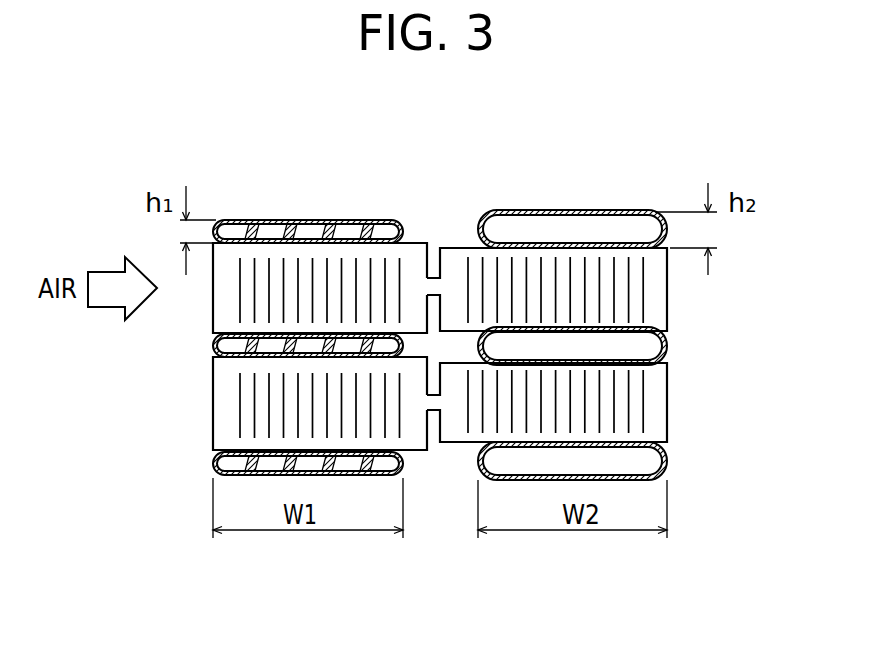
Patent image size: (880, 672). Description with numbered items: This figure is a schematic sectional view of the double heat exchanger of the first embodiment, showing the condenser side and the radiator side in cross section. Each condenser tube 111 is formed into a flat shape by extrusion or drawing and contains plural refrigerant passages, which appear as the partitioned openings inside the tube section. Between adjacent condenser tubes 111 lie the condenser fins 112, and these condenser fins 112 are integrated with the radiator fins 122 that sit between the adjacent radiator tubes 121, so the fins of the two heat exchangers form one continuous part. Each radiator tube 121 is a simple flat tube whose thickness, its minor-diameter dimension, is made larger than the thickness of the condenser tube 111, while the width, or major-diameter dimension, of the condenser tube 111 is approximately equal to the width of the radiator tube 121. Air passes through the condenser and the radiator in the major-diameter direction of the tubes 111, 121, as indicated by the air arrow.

The condenser tube 111 is at (238, 219).
The condenser fin 112 is at (213, 309).
The radiator tube 121 is at (599, 211).
The radiator fin 122 is at (663, 302).